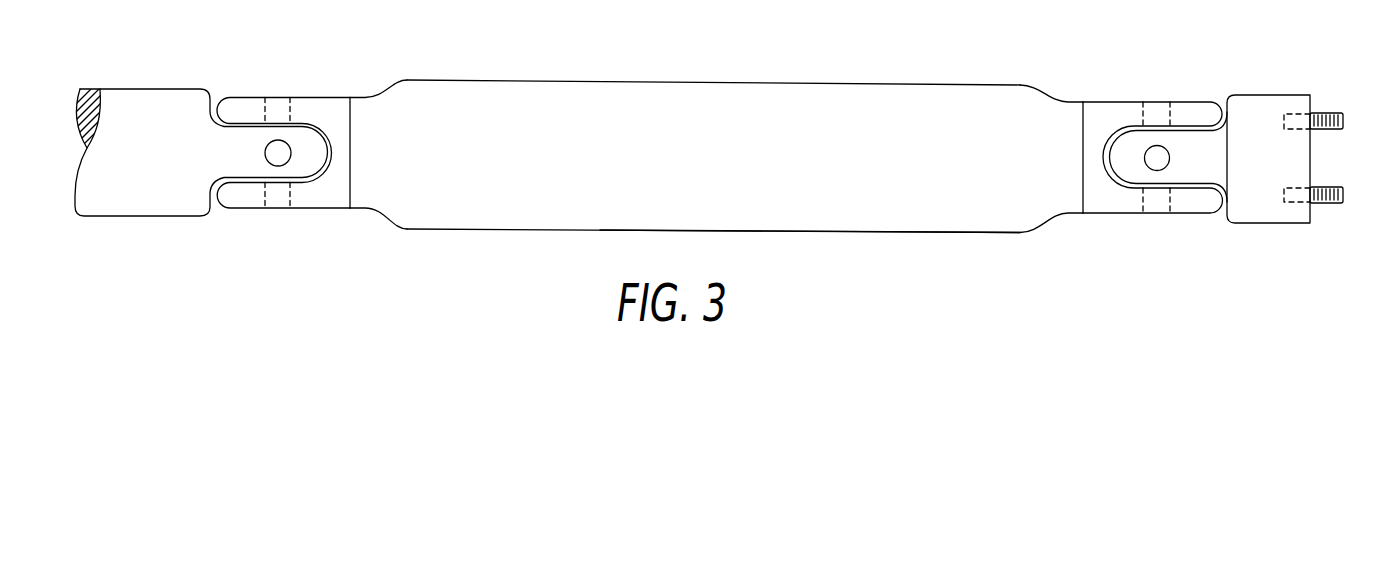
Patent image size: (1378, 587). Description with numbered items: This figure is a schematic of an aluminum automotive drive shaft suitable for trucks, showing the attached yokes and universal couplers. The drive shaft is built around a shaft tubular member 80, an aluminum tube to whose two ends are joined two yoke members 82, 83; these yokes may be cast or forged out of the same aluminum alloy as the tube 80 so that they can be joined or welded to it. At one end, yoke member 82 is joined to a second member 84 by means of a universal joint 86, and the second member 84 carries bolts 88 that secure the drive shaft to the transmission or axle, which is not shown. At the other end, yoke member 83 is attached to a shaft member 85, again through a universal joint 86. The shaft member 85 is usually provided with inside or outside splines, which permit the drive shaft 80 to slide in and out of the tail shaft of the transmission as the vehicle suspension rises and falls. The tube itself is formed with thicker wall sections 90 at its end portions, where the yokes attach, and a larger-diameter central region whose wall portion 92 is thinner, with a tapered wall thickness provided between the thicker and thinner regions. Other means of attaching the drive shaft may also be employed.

The shaft tubular member 80 is at (757, 90).
The yoke member 82 is at (1113, 100).
The yoke member 83 is at (316, 97).
The second member 84 is at (1210, 134).
The shaft member 85 is at (196, 89).
The universal joint 86 is at (272, 152).
The bolts 88 is at (1333, 132).
The thicker wall sections 90 is at (367, 107).
The wall portion 92 is at (812, 233).